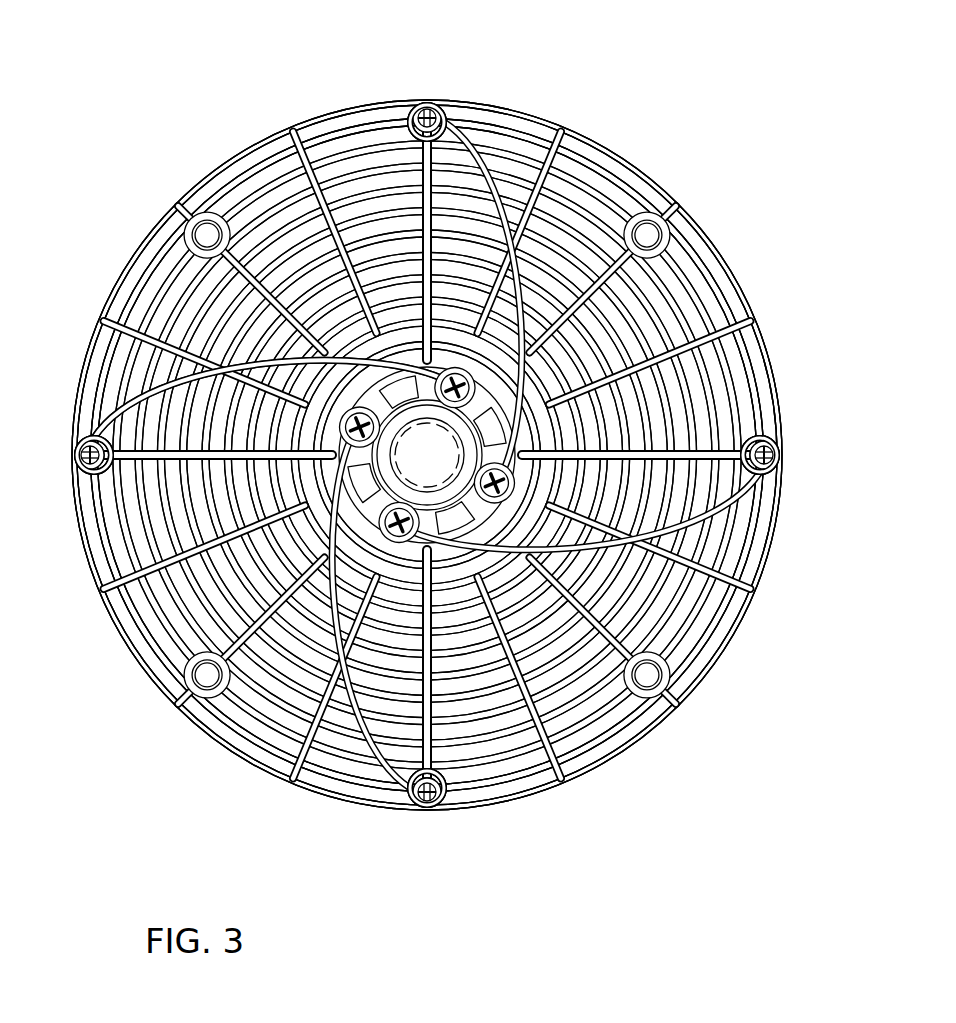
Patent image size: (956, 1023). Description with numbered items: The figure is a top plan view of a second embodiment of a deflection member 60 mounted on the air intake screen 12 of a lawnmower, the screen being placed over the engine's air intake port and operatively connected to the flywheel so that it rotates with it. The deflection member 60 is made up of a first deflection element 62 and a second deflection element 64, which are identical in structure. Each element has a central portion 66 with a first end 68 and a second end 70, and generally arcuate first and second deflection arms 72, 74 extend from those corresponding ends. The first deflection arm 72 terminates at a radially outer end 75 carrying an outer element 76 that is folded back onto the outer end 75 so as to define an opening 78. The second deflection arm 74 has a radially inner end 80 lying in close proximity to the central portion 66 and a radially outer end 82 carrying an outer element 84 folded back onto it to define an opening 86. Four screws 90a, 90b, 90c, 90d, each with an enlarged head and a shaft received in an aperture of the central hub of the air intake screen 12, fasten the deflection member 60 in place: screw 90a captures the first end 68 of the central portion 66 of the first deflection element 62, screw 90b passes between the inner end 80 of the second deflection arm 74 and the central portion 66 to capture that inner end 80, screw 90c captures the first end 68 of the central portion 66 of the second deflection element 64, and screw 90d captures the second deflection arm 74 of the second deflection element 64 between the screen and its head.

The air intake screen 12 is at (122, 650).
The deflection member 60 is at (367, 750).
The first deflection element 62 is at (157, 380).
The second deflection element 64 is at (737, 620).
The central portion 66 is at (397, 393).
The first end 68 is at (327, 438).
The second end 70 is at (615, 178).
The first deflection arm 72 is at (525, 135).
The second deflection arm 74 is at (170, 275).
The radially outer end 75 is at (457, 122).
The outer element 76 is at (392, 130).
The opening 78 is at (418, 110).
The radially inner end 80 is at (297, 123).
The radially outer end 82 is at (78, 445).
The outer element 84 is at (88, 472).
The opening 86 is at (107, 480).
The screw 90a is at (363, 388).
The screw 90b is at (437, 355).
The screw 90c is at (510, 484).
The screw 90d is at (410, 555).